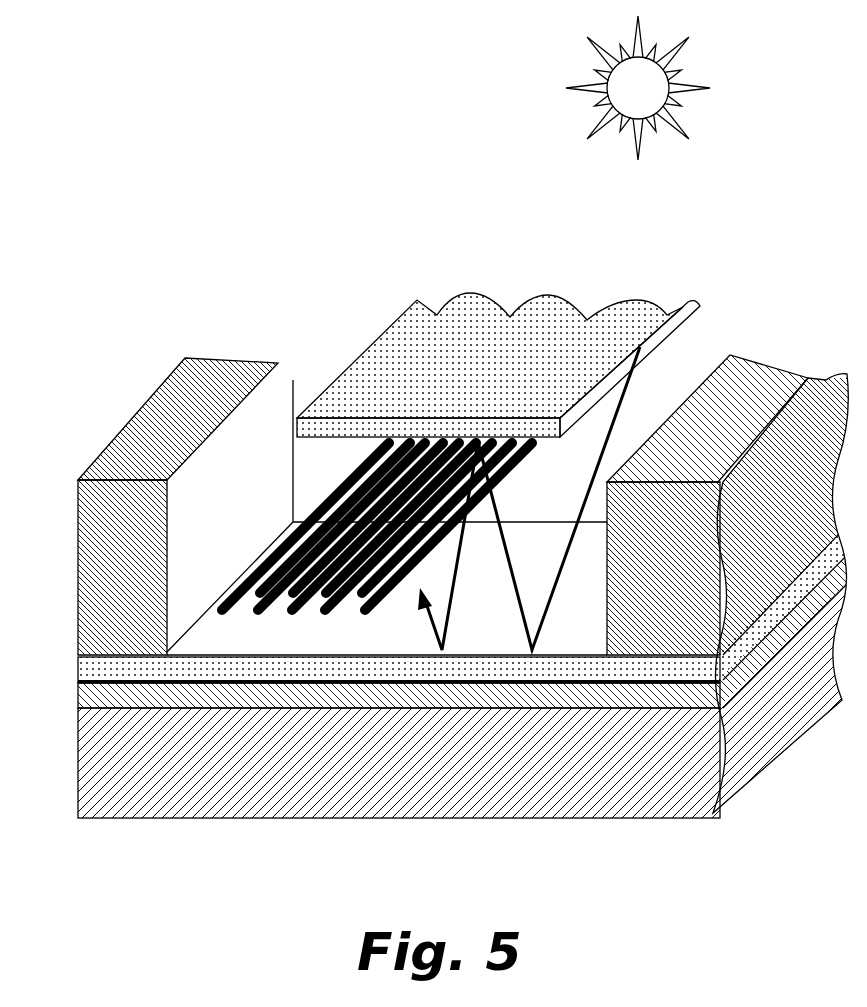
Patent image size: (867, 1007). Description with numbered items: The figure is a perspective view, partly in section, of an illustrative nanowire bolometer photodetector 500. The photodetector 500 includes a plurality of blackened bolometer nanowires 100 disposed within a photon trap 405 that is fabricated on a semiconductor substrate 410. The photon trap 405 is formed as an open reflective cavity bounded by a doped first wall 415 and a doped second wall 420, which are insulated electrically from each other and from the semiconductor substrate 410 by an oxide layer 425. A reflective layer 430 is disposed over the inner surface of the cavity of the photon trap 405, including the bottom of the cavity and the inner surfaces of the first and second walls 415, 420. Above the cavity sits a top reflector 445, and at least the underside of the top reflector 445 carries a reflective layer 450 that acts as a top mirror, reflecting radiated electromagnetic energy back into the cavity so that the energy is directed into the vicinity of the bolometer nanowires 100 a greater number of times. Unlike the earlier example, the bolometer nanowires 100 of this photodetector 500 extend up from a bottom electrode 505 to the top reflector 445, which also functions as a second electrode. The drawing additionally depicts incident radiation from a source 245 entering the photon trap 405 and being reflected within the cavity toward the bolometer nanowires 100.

The photodetector 500 is at (272, 124).
The sun / light source 245 is at (655, 98).
The photon trap 405 is at (516, 342).
The top reflector 445 is at (577, 317).
The reflective layer 450 is at (700, 307).
The first wall 415 is at (232, 372).
The second wall 420 is at (778, 390).
The reflective layer 430 is at (293, 380).
The bolometer nanowires 100 is at (516, 460).
The bottom electrode 505 is at (78, 657).
The oxide layer 425 is at (78, 683).
The semiconductor substrate 410 is at (78, 818).